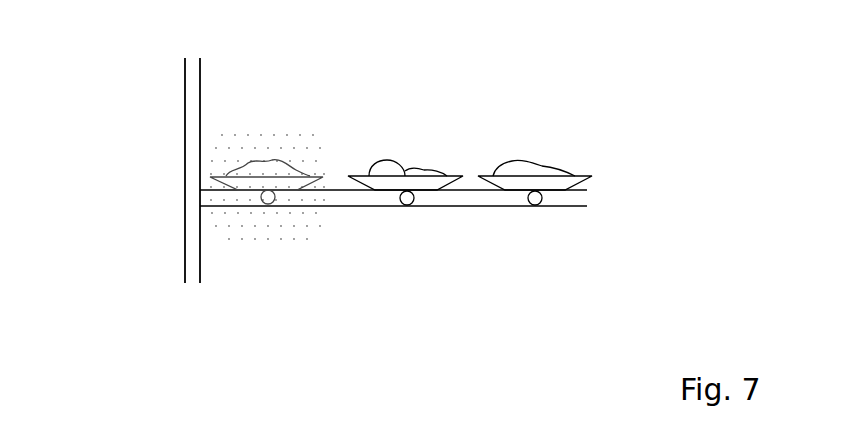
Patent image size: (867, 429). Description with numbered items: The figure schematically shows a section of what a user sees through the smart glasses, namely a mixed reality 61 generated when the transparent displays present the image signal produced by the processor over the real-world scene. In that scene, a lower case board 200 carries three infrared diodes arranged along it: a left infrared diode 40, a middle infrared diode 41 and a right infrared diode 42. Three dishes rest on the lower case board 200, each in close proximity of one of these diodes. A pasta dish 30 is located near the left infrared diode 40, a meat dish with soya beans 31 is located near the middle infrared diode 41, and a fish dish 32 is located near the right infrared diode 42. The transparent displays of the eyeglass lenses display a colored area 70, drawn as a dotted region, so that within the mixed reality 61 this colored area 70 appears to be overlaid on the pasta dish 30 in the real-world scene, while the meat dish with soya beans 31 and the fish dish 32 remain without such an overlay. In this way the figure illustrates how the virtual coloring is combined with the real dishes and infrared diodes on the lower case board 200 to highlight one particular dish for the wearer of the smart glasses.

The mixed reality application 61 is at (128, 82).
The colored area 70 is at (253, 124).
The pasta dish 30 is at (277, 160).
The meat dish with soya beans 31 is at (415, 172).
The fish dish 32 is at (535, 170).
The left infrared diode 40 is at (267, 205).
The middle infrared diode 41 is at (407, 206).
The right infrared diode 42 is at (535, 206).
The lower case board 200 is at (573, 206).